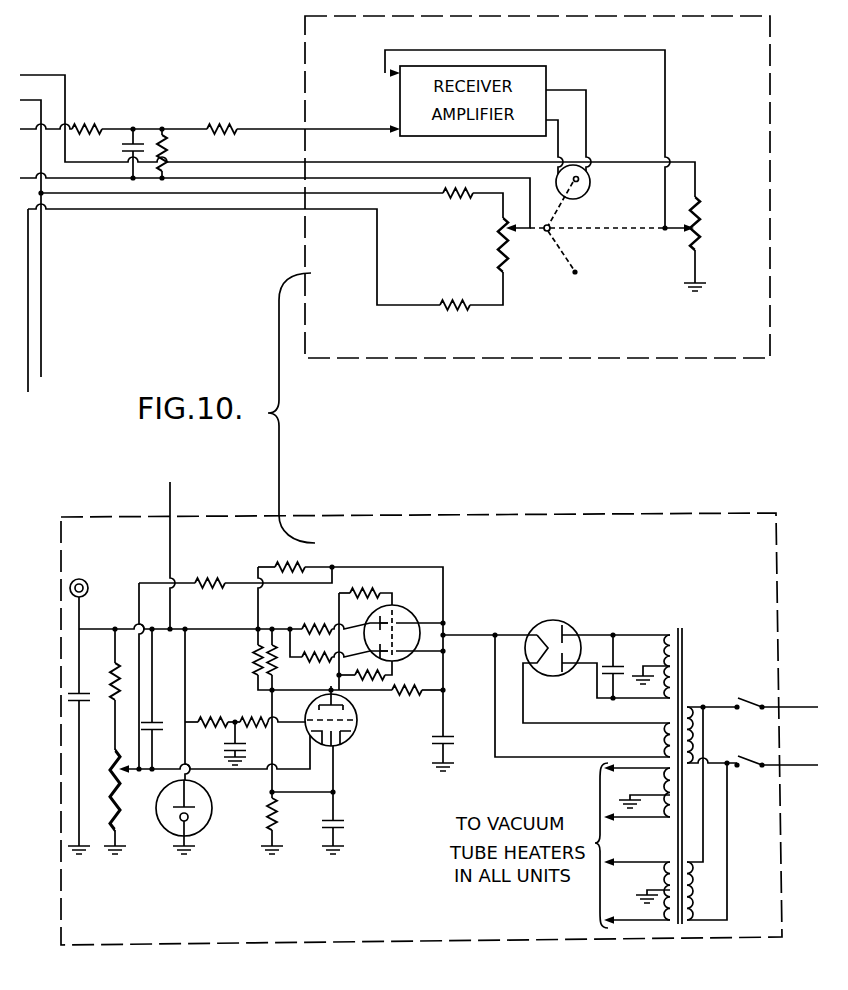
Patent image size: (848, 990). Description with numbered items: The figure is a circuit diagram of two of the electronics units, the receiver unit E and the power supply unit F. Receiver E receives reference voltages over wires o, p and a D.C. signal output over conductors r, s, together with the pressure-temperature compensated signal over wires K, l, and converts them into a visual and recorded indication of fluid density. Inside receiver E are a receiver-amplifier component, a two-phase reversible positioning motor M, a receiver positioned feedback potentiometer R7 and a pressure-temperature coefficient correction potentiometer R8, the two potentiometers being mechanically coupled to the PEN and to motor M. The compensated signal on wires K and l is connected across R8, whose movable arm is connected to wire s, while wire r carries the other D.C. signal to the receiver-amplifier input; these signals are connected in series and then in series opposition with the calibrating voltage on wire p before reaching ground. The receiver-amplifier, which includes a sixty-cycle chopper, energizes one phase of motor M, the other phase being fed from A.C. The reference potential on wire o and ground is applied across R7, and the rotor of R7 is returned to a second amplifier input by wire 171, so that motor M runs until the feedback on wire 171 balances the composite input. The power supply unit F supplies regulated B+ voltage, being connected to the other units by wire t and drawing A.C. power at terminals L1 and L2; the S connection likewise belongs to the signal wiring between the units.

The wire 171 is at (386, 60).
The receiver positioned feedback potentiometer R7 is at (700, 232).
The pressure-temperature coefficient correction potentiometer R8 is at (501, 246).
The two-phase reversible positioning motor M is at (588, 186).
The pen PEN is at (597, 232).
The wire S is at (530, 213).
The wire K is at (377, 253).
The wire l is at (412, 195).
The wire o is at (26, 75).
The wire p is at (26, 100).
The wire r is at (25, 129).
The wire s is at (26, 178).
The wire t is at (170, 494).
The receiver unit E is at (537, 187).
The power supply unit F is at (421, 729).
The A.C. power terminal L1 is at (806, 706).
The A.C. power terminal L2 is at (805, 765).